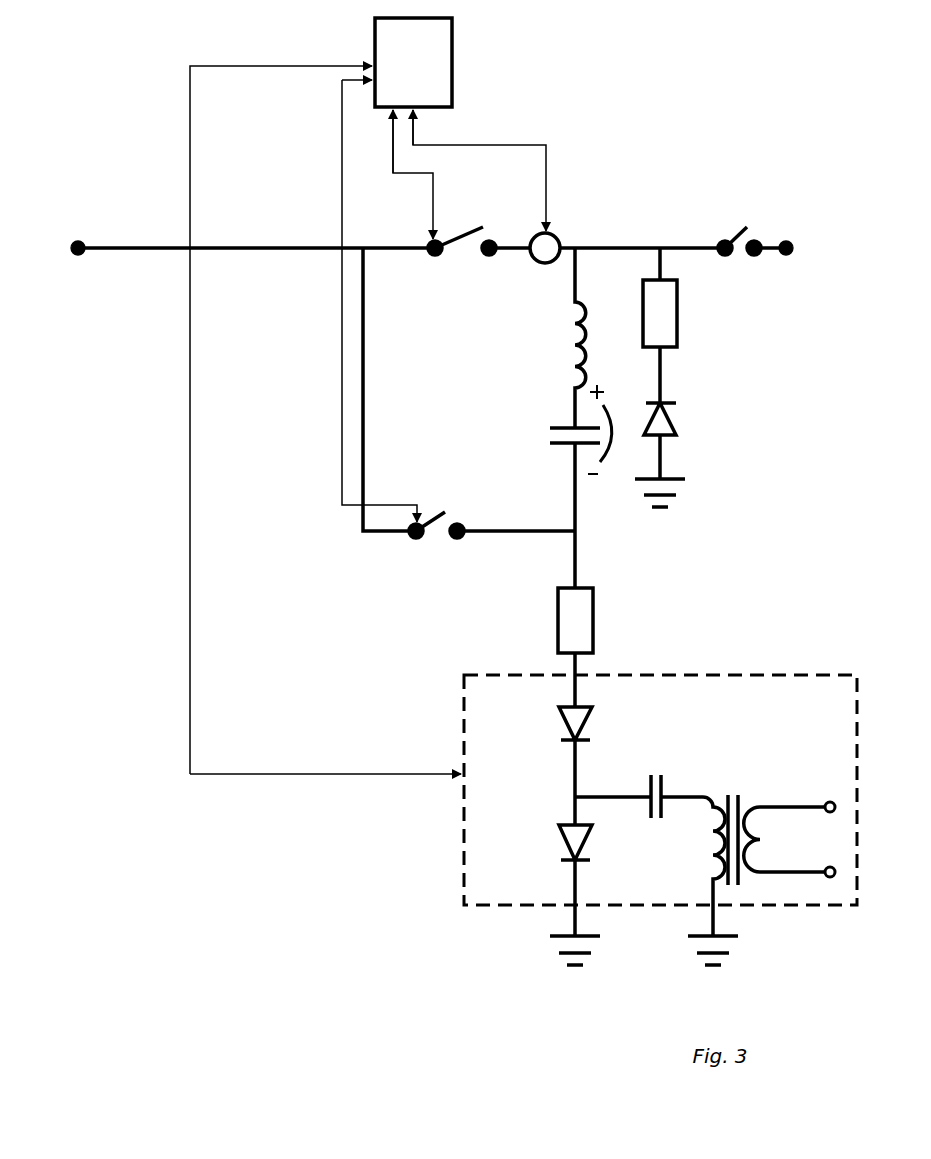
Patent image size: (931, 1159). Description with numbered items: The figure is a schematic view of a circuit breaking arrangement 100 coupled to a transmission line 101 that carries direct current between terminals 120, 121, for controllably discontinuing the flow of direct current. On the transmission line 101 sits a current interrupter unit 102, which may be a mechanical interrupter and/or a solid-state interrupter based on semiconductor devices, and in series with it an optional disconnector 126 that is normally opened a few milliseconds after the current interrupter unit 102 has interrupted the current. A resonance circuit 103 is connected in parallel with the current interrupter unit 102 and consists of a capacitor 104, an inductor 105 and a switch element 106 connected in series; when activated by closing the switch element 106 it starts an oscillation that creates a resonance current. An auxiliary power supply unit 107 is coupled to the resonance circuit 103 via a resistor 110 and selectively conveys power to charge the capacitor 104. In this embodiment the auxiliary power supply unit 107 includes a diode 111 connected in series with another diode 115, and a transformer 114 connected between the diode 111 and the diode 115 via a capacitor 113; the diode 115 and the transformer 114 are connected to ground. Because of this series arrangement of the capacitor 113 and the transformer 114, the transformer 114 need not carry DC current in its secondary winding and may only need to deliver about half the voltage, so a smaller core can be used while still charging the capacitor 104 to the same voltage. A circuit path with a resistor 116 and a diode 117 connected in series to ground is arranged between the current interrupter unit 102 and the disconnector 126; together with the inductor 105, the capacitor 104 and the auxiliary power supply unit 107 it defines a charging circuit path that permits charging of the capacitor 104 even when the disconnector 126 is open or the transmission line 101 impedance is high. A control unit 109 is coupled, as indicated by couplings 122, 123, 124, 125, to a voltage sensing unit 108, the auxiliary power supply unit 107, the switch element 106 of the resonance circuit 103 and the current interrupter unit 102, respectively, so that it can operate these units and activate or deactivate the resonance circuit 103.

The circuit breaking arrangement 100 is at (684, 115).
The transmission line 101 is at (248, 246).
The current interrupter unit 102 is at (468, 220).
The resonance circuit 103 is at (341, 550).
The capacitor 104 is at (540, 424).
The inductor 105 is at (566, 336).
The switch element 106 is at (428, 543).
The auxiliary power supply unit 107 is at (775, 672).
The voltage sensing unit 108 is at (561, 237).
The control unit 109 is at (375, 42).
The resistor 110 is at (594, 617).
The diode 111 is at (556, 720).
The capacitor 113 is at (653, 766).
The transformer 114 is at (762, 790).
The diode 115 is at (556, 846).
The resistor 116 is at (678, 308).
The diode 117 is at (684, 414).
The terminal 120 is at (78, 241).
The terminal 121 is at (786, 241).
The coupling to voltage sensing unit 122 is at (479, 170).
The coupling to auxiliary power supply unit 123 is at (302, 420).
The coupling to resonance circuit 124 is at (359, 301).
The coupling to current interrupter unit 125 is at (408, 174).
The disconnector 126 is at (728, 219).